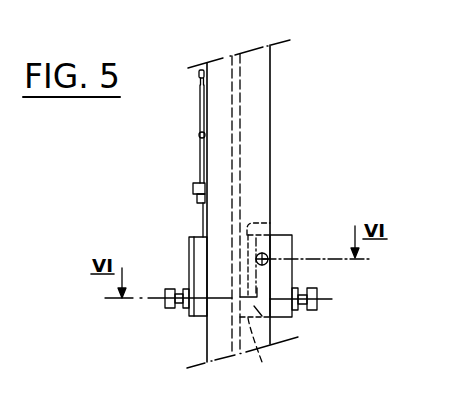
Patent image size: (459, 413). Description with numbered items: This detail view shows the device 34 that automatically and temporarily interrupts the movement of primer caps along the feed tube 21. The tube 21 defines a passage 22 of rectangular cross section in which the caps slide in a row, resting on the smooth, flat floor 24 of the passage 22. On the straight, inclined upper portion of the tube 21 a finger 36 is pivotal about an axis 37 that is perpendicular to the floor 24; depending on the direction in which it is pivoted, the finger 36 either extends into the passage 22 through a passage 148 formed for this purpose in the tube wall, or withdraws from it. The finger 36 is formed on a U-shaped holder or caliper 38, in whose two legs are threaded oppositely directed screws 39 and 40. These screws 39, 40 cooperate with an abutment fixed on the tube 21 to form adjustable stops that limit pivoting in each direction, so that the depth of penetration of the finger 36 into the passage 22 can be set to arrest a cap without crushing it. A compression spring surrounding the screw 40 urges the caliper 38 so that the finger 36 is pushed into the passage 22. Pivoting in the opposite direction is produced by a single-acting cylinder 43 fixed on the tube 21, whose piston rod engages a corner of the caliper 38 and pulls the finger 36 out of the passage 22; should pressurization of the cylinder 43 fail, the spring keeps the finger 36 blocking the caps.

The tube 21 is at (270, 97).
The passage 22 is at (236, 165).
The passage floor 24 is at (237, 353).
The device 34 is at (162, 167).
The finger 36 is at (272, 325).
The axis 37 is at (265, 258).
The U-shaped holder or caliper 38 is at (190, 252).
The screw 39 is at (315, 295).
The screw 40 is at (168, 309).
The single-acting cylinder 43 is at (200, 128).
The passage 148 is at (274, 349).